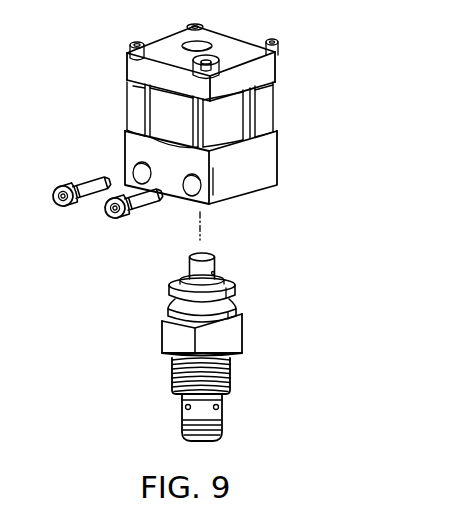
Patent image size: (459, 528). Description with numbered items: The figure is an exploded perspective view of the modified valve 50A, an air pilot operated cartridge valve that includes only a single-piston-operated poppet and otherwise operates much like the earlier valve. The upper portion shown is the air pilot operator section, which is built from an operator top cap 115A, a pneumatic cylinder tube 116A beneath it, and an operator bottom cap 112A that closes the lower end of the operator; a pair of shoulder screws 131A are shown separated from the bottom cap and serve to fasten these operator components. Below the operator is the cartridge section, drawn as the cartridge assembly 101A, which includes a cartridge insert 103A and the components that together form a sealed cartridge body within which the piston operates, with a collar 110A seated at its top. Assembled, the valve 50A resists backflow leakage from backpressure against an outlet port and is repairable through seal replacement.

The modified valve 50A is at (127, 34).
The operator top cap 115A is at (272, 66).
The pneumatic cylinder tube #1 116A is at (243, 103).
The operator bottom cap 112A is at (258, 160).
The shoulder screws 131A is at (127, 218).
The collar 110A is at (210, 258).
The cartridge insert 103A is at (234, 291).
The cartridge assembly 101A is at (167, 340).